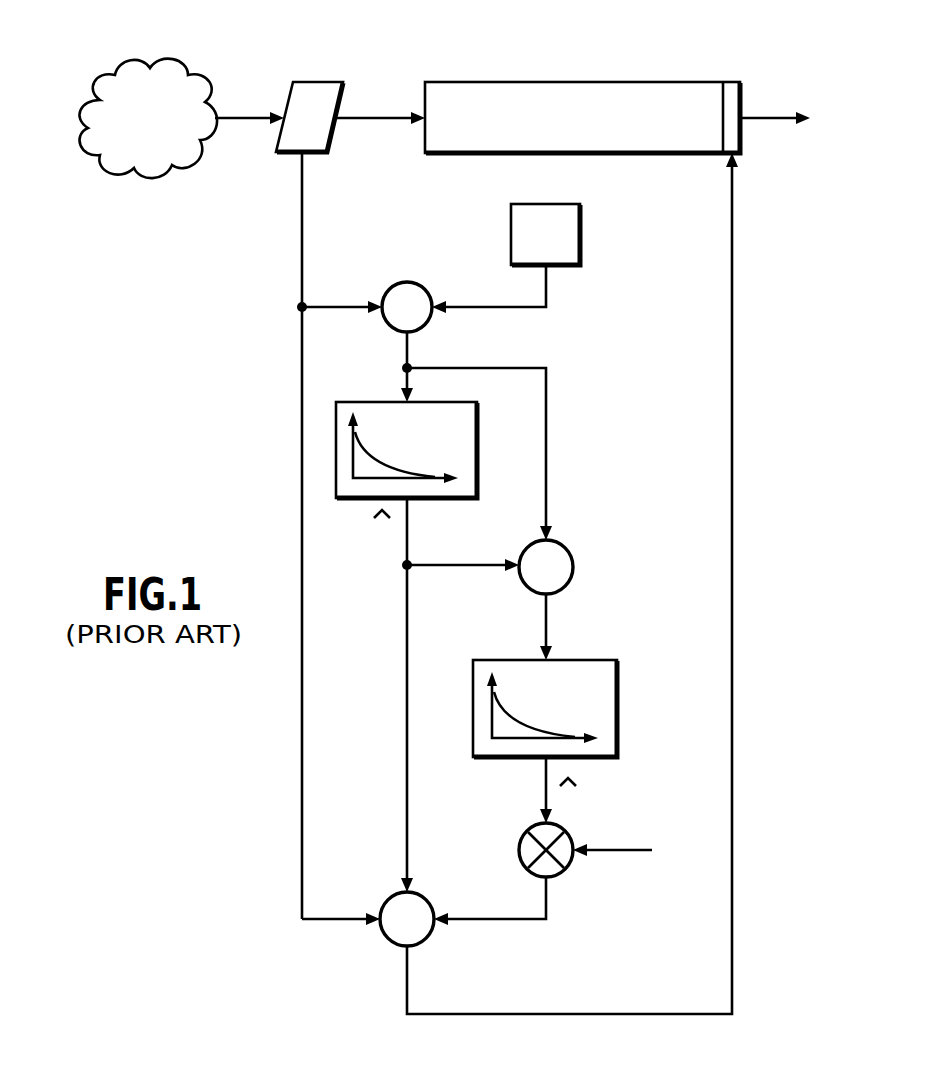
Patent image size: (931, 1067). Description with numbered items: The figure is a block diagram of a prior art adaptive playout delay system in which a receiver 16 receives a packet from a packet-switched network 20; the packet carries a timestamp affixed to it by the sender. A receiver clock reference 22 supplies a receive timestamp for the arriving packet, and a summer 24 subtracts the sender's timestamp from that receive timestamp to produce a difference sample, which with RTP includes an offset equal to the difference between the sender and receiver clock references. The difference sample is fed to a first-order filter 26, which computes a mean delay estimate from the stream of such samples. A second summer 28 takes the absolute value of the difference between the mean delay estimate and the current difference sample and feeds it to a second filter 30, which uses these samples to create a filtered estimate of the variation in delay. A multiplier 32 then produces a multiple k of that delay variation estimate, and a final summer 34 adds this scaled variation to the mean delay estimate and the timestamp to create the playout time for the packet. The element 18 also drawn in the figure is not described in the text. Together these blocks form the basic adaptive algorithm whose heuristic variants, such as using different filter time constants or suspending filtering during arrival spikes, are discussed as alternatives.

The receiver 16 is at (434, 32).
The playout buffer 18 is at (595, 133).
The packet-switched network 20 is at (161, 133).
The receiver clock reference 22 is at (560, 252).
The summer 24 is at (407, 283).
The first-order filter 26 is at (347, 402).
The summer 28 is at (575, 567).
The second filter 30 is at (505, 660).
The multiplier 32 is at (519, 850).
The summer 34 is at (426, 941).